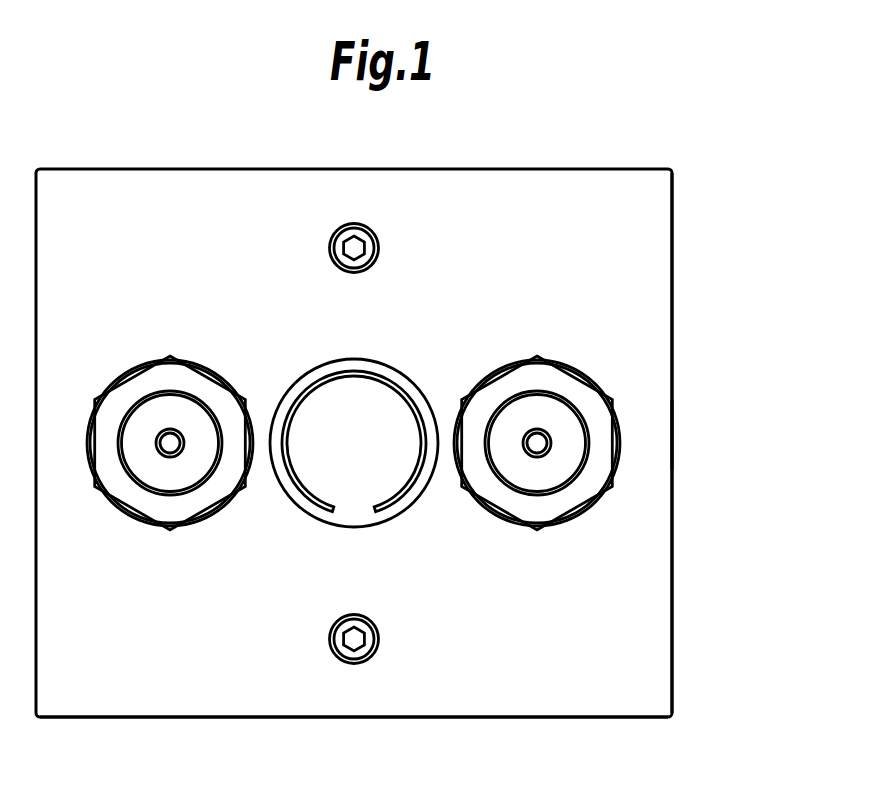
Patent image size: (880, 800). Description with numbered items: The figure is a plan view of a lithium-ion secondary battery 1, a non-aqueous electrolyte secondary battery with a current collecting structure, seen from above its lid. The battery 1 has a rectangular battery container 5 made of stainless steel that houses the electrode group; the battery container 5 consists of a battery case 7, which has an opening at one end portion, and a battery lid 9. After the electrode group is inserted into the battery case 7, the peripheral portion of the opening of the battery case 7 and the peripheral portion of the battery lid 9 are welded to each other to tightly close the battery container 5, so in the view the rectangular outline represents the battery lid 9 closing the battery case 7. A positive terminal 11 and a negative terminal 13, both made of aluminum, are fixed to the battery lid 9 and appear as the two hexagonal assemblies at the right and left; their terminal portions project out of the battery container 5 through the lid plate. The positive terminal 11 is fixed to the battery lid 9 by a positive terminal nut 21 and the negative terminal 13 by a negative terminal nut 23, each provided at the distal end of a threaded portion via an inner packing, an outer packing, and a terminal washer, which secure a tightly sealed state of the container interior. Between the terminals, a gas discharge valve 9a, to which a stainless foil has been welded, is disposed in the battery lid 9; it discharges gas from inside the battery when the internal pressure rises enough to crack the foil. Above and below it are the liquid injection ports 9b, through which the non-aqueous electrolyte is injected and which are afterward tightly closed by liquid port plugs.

The lithium-ion secondary battery 1 is at (576, 146).
The battery container 5 is at (678, 432).
The battery case 7 is at (672, 281).
The battery lid 9 is at (647, 661).
The gas discharge valve 9a is at (328, 372).
The liquid injection port 9b is at (380, 248).
The positive terminal 11 is at (562, 387).
The negative terminal 13 is at (143, 383).
The positive terminal nut 21 is at (555, 462).
The negative terminal nut 23 is at (183, 470).